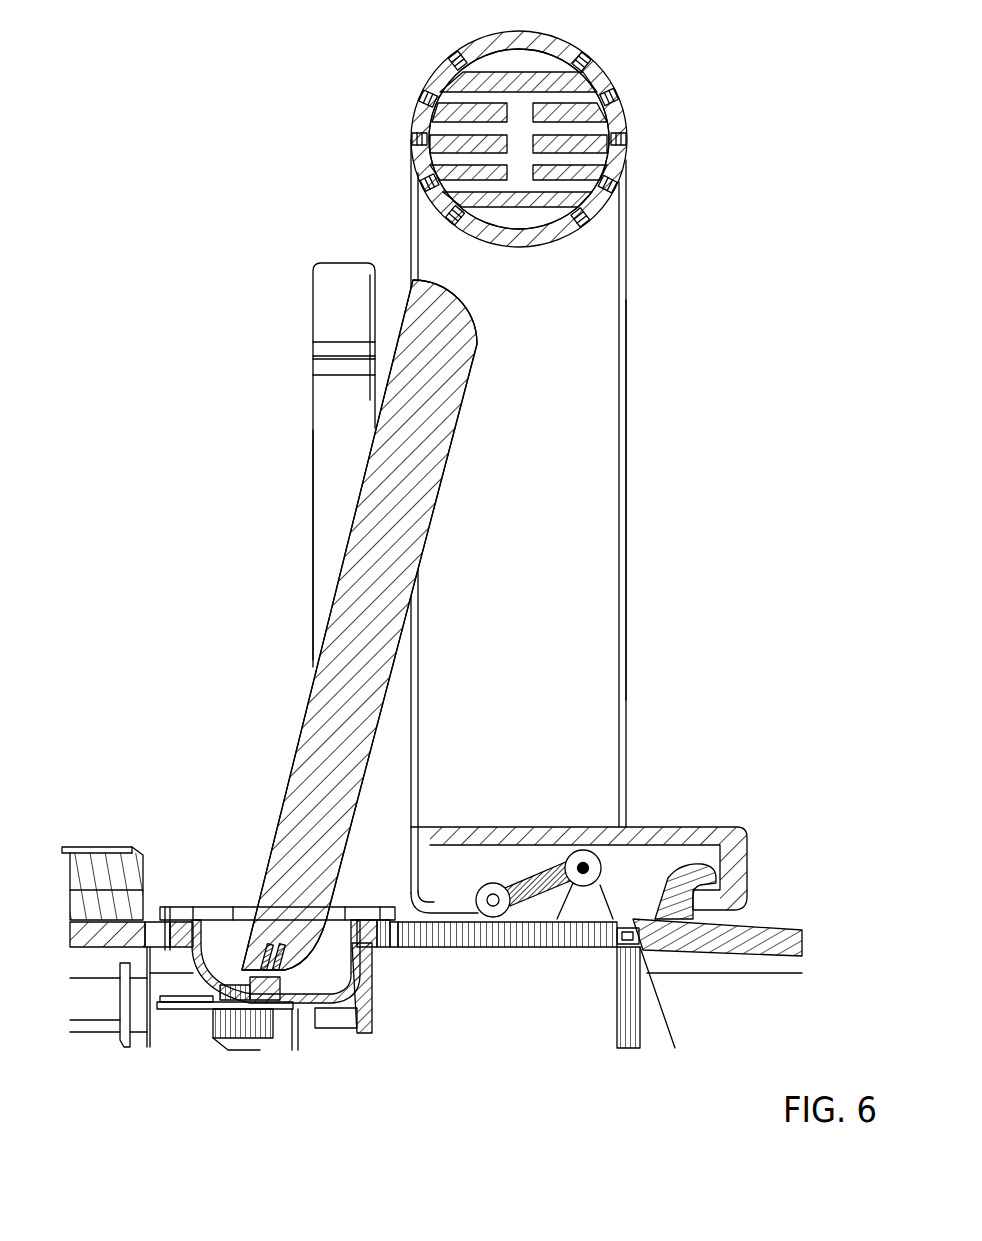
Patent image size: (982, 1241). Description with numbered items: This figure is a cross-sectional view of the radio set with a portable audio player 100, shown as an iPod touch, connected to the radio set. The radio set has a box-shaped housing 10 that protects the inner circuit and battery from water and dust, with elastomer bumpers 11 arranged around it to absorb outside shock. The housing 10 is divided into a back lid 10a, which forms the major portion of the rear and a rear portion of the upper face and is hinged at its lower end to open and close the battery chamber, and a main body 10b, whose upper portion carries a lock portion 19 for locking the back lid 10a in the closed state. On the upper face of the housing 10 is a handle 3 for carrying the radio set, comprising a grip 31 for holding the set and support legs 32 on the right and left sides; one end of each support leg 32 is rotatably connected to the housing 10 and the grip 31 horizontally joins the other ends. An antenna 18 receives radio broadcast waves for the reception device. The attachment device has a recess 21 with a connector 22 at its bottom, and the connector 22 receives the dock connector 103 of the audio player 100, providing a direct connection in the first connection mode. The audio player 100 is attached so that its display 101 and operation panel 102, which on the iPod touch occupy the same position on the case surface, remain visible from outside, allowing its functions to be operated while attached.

The handle 3 is at (652, 210).
The housing 10 is at (513, 897).
The back lid 10a is at (760, 940).
The main body 10b is at (586, 928).
The elastomer bumpers 11 is at (90, 877).
The antenna 18 is at (335, 318).
The lock portion 19 is at (735, 845).
The recess 21 is at (216, 960).
The connector 22 is at (265, 992).
The grip 31 is at (590, 82).
The support legs 32 is at (600, 440).
The portable audio player 100 is at (448, 513).
The display 101 is at (234, 545).
The operation panel 102 is at (347, 541).
The dock connector 103 is at (247, 970).